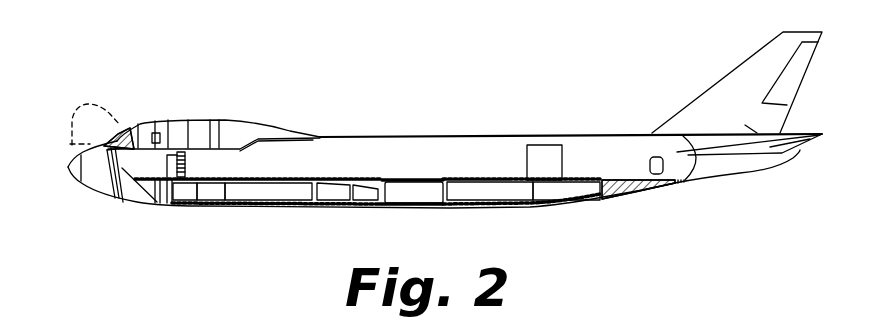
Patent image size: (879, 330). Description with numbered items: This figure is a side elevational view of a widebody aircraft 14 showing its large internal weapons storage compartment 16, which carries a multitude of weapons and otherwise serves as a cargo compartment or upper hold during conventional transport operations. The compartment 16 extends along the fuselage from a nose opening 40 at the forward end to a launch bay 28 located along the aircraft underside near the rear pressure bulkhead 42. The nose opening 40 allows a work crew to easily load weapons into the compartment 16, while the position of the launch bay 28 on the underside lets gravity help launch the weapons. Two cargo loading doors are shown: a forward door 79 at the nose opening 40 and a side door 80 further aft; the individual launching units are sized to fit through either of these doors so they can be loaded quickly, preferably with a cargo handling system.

The aircraft 14 is at (268, 121).
The internal weapons storage compartment 16 is at (437, 155).
The launch bay 28 is at (639, 194).
The nose opening 40 is at (120, 163).
The rear pressure bulkhead 42 is at (705, 170).
The forward door 79 is at (110, 125).
The side door 80 is at (563, 157).